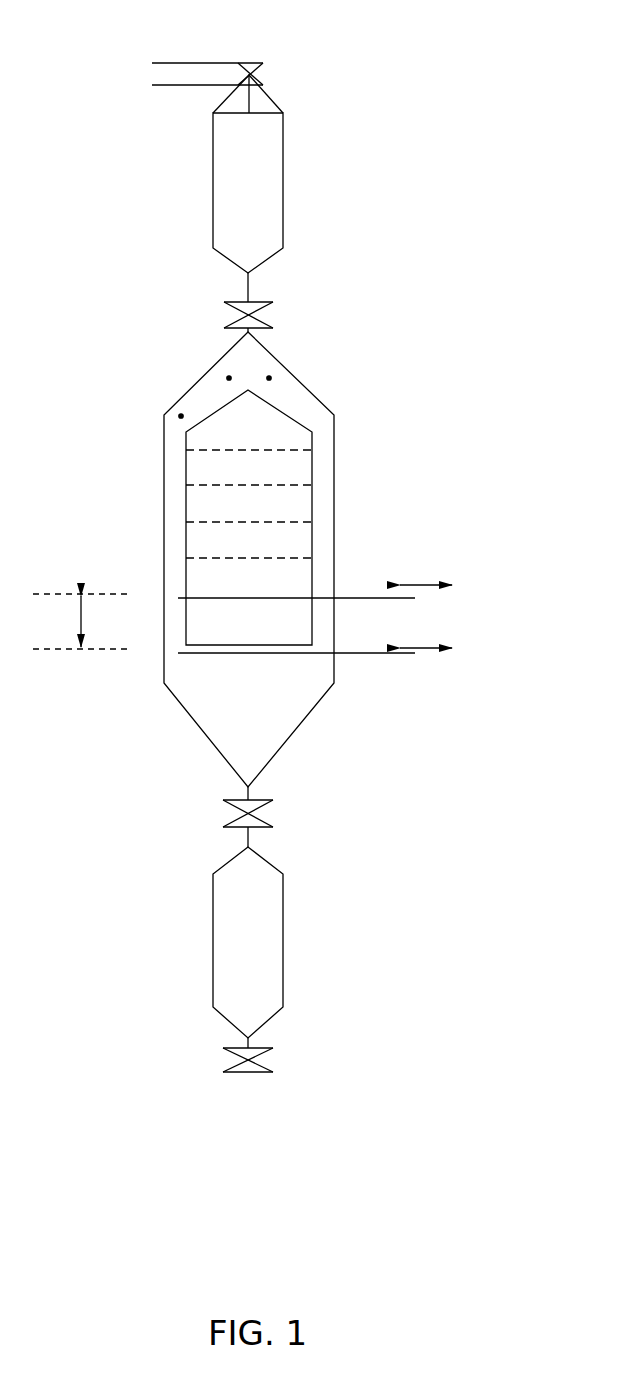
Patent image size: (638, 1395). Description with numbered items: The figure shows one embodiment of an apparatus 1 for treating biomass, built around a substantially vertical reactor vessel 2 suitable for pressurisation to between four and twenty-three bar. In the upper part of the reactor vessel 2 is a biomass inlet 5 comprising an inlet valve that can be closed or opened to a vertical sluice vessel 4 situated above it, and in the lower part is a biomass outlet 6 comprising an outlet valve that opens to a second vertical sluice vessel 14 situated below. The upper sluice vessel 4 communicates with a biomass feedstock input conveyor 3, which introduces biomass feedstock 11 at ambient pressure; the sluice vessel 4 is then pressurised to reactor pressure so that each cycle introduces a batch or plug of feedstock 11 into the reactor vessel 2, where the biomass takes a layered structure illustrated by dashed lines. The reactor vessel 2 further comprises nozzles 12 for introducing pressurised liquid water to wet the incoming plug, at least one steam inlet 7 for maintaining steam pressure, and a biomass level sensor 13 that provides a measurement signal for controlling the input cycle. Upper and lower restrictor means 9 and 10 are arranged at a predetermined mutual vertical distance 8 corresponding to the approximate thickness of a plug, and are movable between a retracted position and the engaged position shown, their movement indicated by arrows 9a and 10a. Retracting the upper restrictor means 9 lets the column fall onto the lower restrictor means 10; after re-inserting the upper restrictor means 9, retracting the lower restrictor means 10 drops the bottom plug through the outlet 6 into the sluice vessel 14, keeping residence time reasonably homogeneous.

The apparatus 1 is at (483, 514).
The reactor vessel 2 is at (336, 415).
The biomass feedstock input conveyor 3 is at (181, 74).
The sluice vessel 4 is at (283, 187).
The biomass inlet 5 is at (273, 306).
The biomass outlet 6 is at (274, 798).
The steam inlet 7 is at (320, 442).
The predetermined mutual vertical distance 8 is at (80, 621).
The upper restrictor means 9 is at (357, 595).
The arrow illustrating movement of upper restrictor means 9a is at (432, 582).
The lower restrictor means 10 is at (360, 650).
The arrow illustrating movement of lower restrictor means 10a is at (433, 645).
The biomass feedstock 11 is at (249, 525).
The nozzles 12 is at (228, 377).
The biomass level sensor 13 is at (180, 415).
The sluice vessel 14 is at (284, 872).